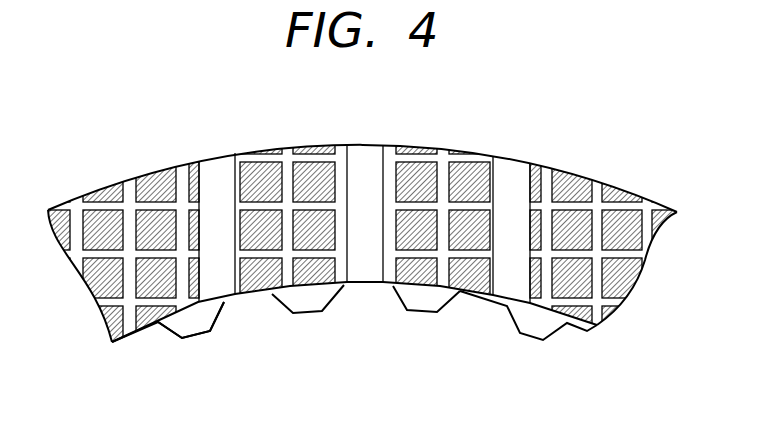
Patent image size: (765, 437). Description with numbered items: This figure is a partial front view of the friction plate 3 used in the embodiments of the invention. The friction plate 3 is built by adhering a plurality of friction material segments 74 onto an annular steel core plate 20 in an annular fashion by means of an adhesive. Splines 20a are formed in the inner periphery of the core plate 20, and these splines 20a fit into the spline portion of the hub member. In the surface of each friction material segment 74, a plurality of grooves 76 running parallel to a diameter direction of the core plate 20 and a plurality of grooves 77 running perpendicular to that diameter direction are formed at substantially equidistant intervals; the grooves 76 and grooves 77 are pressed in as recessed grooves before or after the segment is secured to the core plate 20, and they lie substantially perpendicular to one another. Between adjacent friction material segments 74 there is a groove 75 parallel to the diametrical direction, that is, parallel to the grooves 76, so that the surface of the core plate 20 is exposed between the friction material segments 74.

The friction plate 3 is at (93, 159).
The core plate 20 is at (363, 156).
The splines 20a is at (218, 316).
The friction material segment 74 is at (361, 230).
The groove 75 is at (510, 173).
The grooves 76 is at (283, 184).
The grooves 77 is at (318, 208).